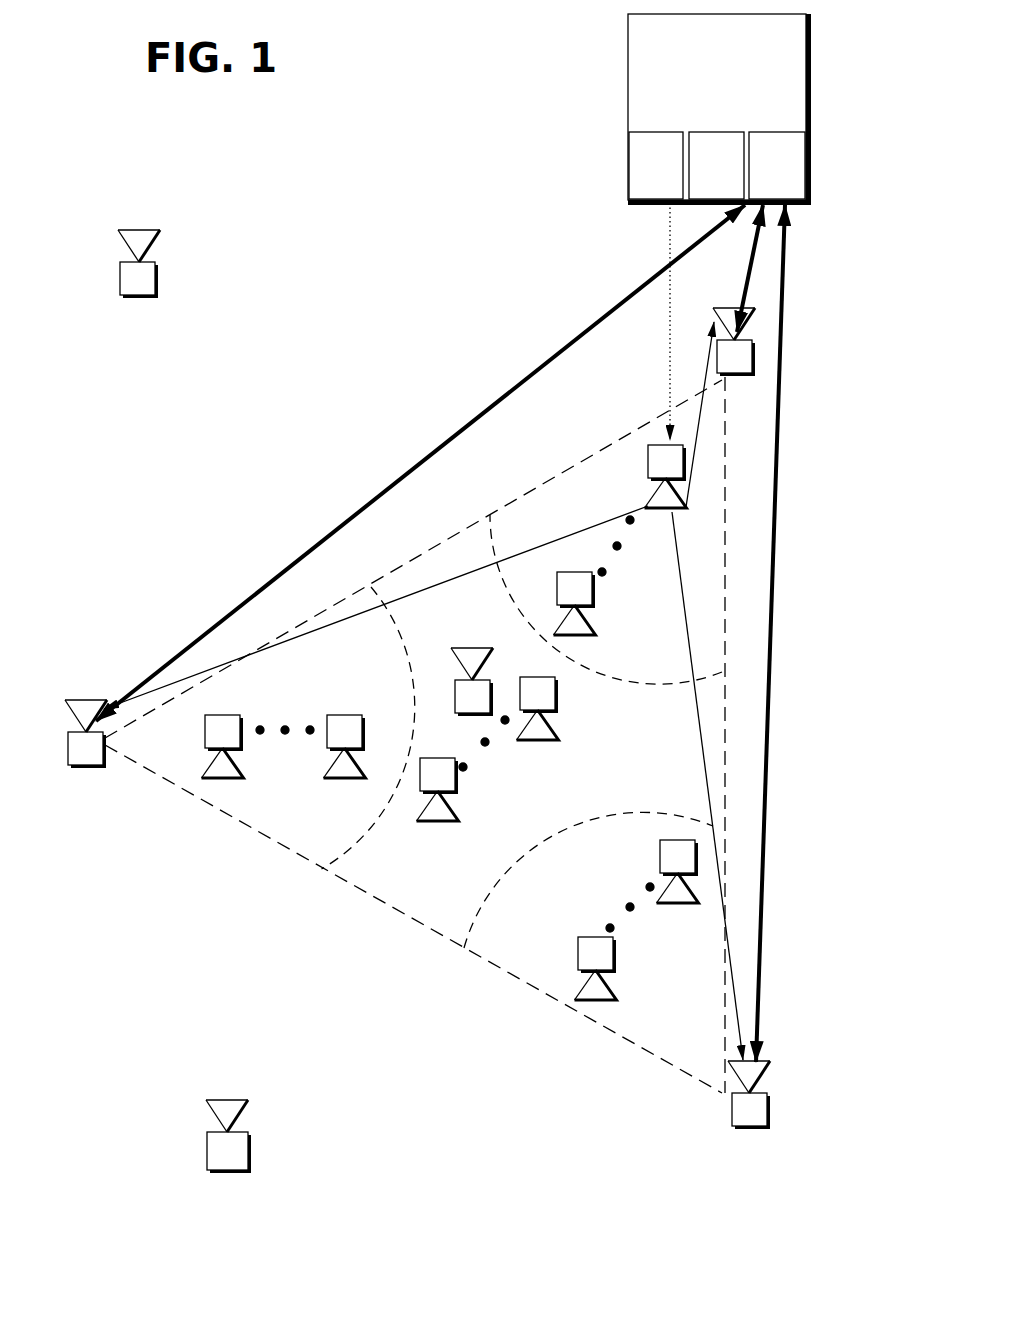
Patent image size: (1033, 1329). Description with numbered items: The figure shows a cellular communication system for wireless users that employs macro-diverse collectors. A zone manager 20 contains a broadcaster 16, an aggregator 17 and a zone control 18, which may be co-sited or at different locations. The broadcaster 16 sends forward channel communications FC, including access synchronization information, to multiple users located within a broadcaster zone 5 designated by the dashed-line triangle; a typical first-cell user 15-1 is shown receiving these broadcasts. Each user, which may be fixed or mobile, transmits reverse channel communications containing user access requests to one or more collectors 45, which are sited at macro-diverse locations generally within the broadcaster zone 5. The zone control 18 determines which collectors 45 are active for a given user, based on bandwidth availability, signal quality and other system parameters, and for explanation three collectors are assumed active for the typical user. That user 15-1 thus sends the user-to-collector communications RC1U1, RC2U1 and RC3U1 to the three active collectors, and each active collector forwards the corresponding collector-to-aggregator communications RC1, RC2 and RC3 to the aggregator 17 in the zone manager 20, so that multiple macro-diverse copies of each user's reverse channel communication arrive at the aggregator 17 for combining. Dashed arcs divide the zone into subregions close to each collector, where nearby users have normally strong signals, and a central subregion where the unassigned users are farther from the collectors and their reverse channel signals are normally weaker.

The zone manager 20 is at (645, 72).
The broadcaster 16 is at (650, 185).
The zone control 18 is at (705, 133).
The aggregator 17 is at (787, 167).
The collectors 45 is at (158, 277).
The U1 user 15-1 is at (657, 443).
The broadcaster zone 5 is at (505, 800).
The collector-to-aggregator reverse channel communication c/a RC1 is at (757, 253).
The collector-to-aggregator reverse channel communication c/a RC2 is at (772, 609).
The collector-to-aggregator reverse channel communication c/a RC3 is at (292, 556).
The user-to-collector reverse channel communication u/c RC1U1 is at (700, 428).
The user-to-collector reverse channel communication u/c RC2U1 is at (697, 713).
The user-to-collector reverse channel communication u/c RC3U1 is at (397, 597).
The forward channel communications FC is at (652, 321).